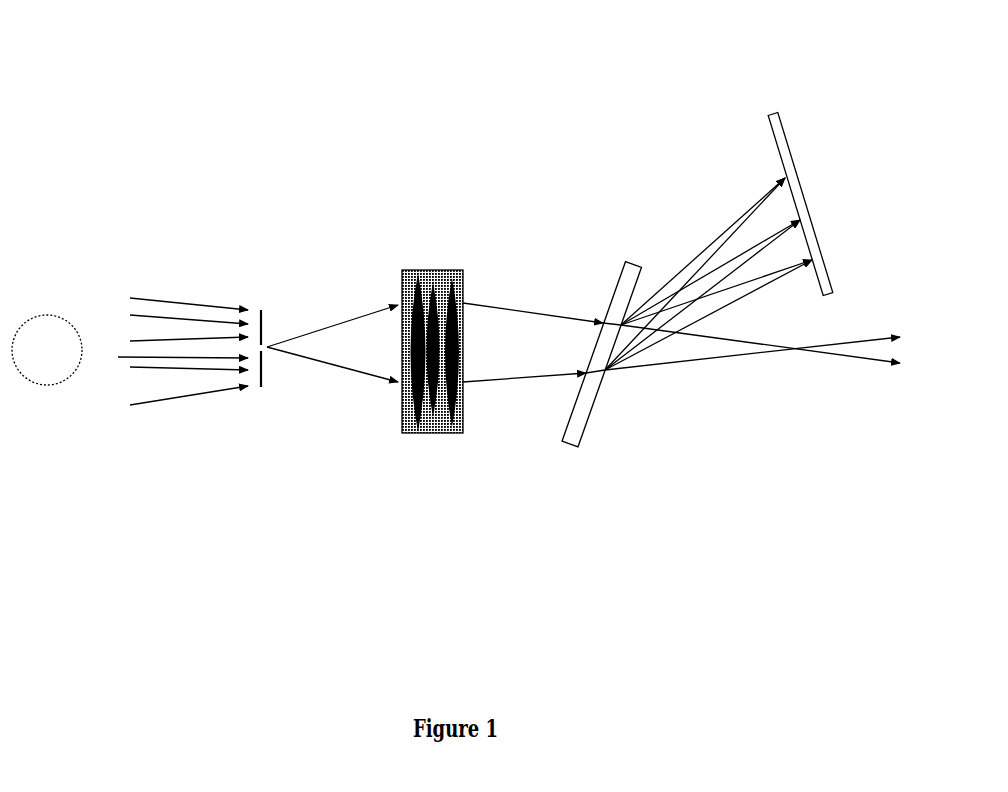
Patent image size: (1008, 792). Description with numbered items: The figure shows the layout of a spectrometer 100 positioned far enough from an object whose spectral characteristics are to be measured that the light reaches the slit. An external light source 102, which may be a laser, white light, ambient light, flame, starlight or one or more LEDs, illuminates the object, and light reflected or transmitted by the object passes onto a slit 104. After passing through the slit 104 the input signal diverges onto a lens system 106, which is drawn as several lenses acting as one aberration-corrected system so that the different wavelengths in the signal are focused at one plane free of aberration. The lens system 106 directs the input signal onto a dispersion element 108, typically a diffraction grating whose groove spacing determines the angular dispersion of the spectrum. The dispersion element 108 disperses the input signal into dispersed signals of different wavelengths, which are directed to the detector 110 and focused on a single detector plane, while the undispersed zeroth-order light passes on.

The spectrometer 100 is at (133, 82).
The light source 102 is at (40, 316).
The slit 104 is at (265, 318).
The lens system 106 is at (463, 288).
The dispersion element 108 is at (583, 430).
The detector 110 is at (828, 275).